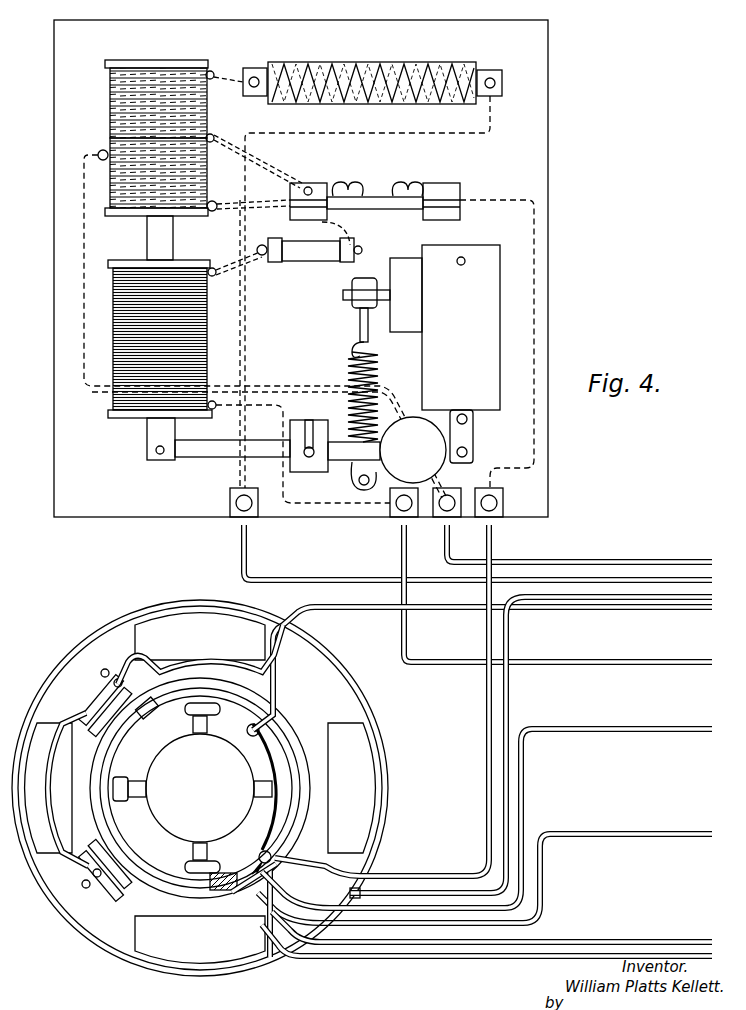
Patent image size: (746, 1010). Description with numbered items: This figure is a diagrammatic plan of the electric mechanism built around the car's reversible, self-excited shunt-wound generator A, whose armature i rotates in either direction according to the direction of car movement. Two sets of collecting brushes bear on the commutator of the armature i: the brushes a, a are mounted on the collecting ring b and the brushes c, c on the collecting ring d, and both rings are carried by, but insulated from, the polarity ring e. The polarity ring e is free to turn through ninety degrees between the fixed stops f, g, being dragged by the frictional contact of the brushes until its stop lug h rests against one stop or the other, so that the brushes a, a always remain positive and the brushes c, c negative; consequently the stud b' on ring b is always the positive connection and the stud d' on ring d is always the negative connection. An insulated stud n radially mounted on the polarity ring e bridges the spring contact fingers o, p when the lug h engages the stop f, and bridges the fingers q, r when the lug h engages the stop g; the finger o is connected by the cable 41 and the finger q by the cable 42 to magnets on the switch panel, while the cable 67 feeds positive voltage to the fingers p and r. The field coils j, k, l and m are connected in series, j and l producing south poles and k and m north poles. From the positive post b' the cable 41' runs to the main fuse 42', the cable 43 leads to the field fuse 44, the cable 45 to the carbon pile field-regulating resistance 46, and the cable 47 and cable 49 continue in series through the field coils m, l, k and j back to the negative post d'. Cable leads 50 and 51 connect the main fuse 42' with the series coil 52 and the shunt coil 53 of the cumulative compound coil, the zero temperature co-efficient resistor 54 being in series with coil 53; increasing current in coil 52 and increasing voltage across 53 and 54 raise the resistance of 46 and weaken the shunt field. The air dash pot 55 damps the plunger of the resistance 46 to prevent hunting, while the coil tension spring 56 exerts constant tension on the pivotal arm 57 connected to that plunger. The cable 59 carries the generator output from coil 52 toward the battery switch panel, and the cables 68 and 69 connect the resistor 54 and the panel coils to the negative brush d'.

The cable 41 is at (492, 927).
The cable 41' is at (382, 700).
The cable 42 is at (487, 954).
The main fuse 42' is at (412, 325).
The cable 43 is at (356, 230).
The field fuse 44 is at (317, 258).
The cable 45 is at (254, 264).
The carbon pile field-regulating resistance 46 is at (208, 335).
The cable 47 is at (326, 518).
The cable 49 is at (570, 732).
The cable lead 50 is at (260, 206).
The cable lead 51 is at (270, 170).
The series coil 52 is at (207, 185).
The shunt coil 53 is at (208, 118).
The zero temperature co-efficient resistor 54 is at (392, 64).
The air dash pot 55 is at (445, 354).
The coil tension spring 56 is at (372, 368).
The pivotal arm 57 is at (345, 462).
The cable 59 is at (88, 237).
The cable 67 is at (570, 610).
The cable 68 is at (612, 600).
The cable 69 is at (488, 138).
The generator A is at (200, 788).
The brush a is at (193, 722).
The collecting ring b is at (249, 769).
The stud b' is at (479, 728).
The brush c is at (136, 780).
The collecting ring d is at (131, 833).
The stud d' is at (292, 894).
The polarity ring e is at (104, 766).
The stop f is at (158, 704).
The stop g is at (212, 876).
The stop lug h is at (140, 715).
The armature i is at (218, 740).
The field coil j is at (200, 939).
The field coil k is at (48, 788).
The field coil l is at (200, 636).
The field coil m is at (351, 788).
The stud n is at (90, 722).
The spring contact finger o is at (112, 690).
The spring contact finger p is at (100, 690).
The spring contact finger q is at (100, 905).
The spring contact finger r is at (120, 915).